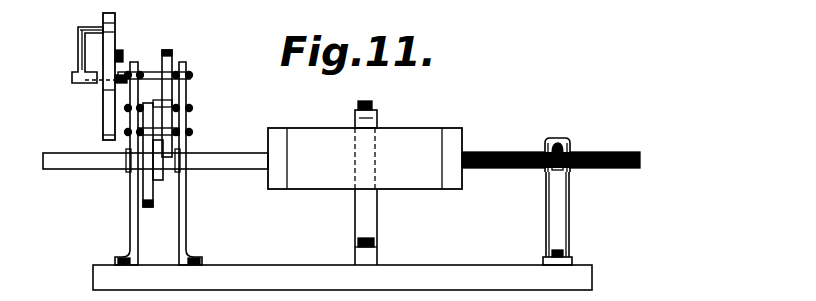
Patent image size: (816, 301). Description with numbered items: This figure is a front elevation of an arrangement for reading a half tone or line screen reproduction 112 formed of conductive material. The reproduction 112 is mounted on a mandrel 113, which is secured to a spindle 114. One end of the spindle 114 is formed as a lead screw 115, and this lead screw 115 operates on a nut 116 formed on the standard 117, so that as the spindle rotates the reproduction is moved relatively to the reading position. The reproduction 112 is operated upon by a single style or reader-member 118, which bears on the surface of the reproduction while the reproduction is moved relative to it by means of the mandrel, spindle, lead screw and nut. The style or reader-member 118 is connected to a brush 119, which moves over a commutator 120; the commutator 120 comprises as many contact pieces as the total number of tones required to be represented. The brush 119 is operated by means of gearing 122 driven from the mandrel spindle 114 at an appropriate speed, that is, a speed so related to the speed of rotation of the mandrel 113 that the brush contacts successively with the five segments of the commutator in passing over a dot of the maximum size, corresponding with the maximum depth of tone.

The half tone or line screen reproduction 112 is at (297, 148).
The mandrel 113 is at (460, 128).
The spindle 114 is at (207, 158).
The lead screw 115 is at (600, 152).
The nut 116 is at (558, 135).
The standard 117 is at (557, 202).
The style or reader-member 118 is at (375, 120).
The brush 119 is at (92, 30).
The commutator 120 is at (110, 45).
The gearing 122 is at (155, 122).